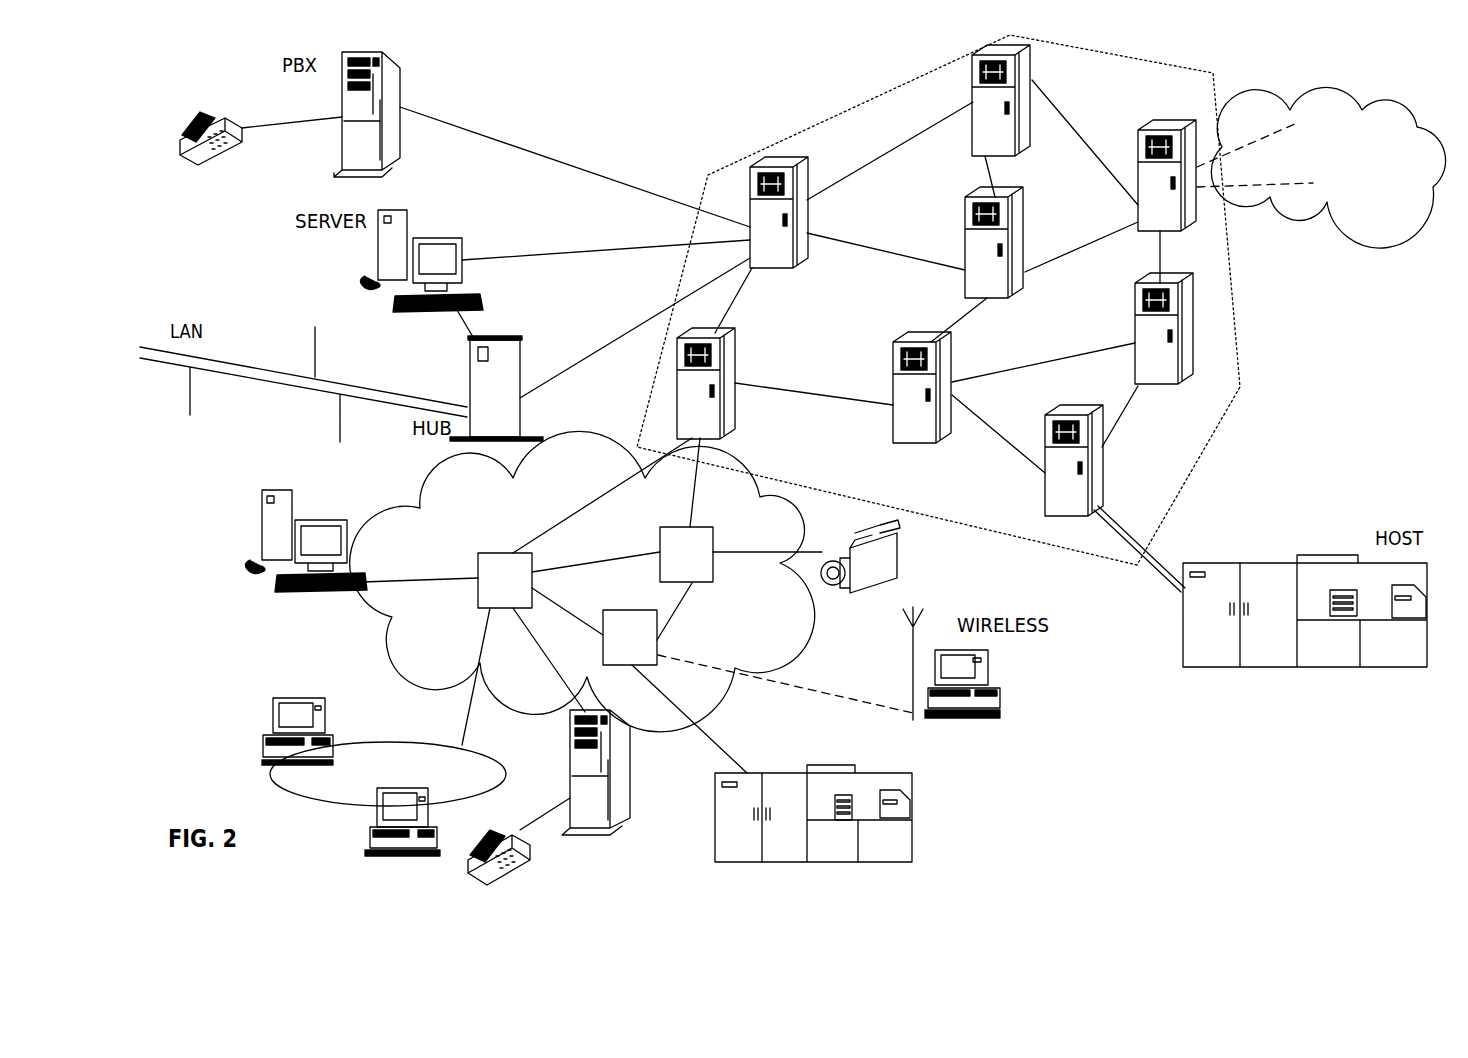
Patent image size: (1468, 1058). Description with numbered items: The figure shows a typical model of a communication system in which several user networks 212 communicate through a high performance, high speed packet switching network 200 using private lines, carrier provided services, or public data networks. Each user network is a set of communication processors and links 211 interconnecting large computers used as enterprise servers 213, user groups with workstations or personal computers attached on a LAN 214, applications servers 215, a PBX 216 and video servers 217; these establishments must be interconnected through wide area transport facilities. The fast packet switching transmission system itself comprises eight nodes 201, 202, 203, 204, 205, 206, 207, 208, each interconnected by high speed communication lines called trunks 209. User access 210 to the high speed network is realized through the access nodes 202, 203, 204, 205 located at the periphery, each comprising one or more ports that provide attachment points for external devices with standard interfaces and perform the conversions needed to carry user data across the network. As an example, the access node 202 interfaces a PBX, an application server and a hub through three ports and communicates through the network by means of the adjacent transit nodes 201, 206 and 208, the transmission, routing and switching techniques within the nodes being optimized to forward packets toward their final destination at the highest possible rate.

The high performance network 200 is at (788, 135).
The transit node 201 is at (1027, 55).
The access node 202 is at (808, 167).
The access node 203 is at (1087, 410).
The access node 204 is at (1184, 128).
The access node 205 is at (735, 353).
The transit node 206 is at (922, 335).
The node 207 is at (1185, 277).
The transit node 208 is at (1010, 196).
The trunk 209 is at (1106, 243).
The access 210 is at (607, 176).
The communication processors and links 211 is at (422, 502).
The user network 212 is at (1322, 95).
The enterprise server 213 is at (897, 792).
The LAN 214 is at (362, 745).
The applications server 215 is at (283, 490).
The PBX 216 is at (578, 835).
The video server 217 is at (855, 533).